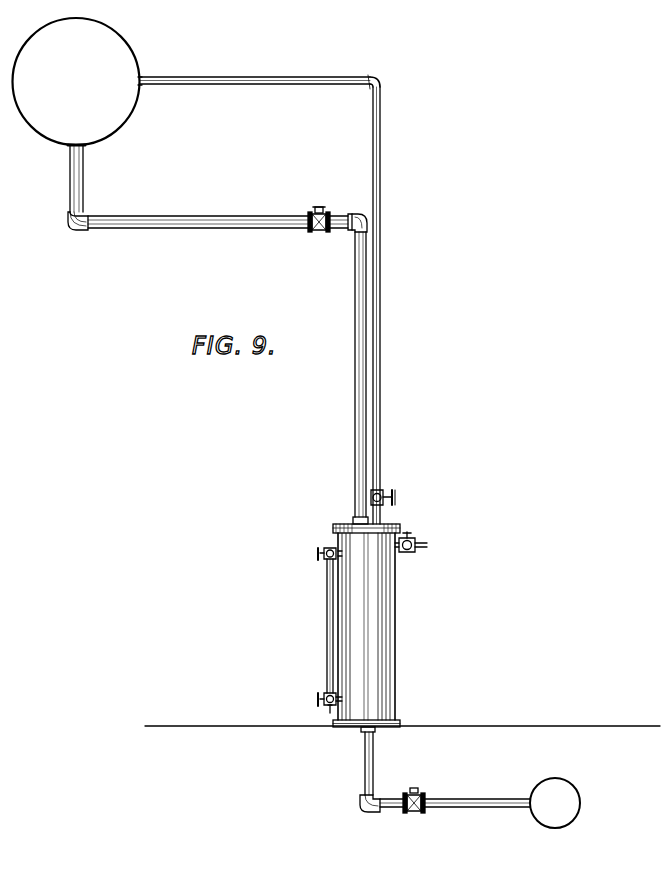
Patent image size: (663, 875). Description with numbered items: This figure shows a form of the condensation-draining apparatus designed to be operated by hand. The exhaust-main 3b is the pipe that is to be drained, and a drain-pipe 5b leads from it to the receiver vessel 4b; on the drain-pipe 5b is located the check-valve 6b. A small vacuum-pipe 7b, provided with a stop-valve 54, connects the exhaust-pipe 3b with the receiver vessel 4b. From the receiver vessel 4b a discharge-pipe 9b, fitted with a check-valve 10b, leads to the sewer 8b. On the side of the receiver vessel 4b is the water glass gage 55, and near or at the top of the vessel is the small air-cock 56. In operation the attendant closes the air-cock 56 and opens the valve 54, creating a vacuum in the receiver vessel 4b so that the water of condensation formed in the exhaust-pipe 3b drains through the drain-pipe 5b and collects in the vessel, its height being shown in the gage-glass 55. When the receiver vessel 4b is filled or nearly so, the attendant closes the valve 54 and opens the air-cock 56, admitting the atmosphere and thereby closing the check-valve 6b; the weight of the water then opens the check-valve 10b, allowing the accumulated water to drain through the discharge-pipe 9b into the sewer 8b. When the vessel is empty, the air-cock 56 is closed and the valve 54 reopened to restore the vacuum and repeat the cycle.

The exhaust-main 3b is at (78, 81).
The receiver vessel 4b is at (380, 598).
The drain-pipe 5b is at (207, 215).
The check-valve 6b is at (317, 210).
The vacuum-pipe 7b is at (381, 182).
The sewer 8b is at (566, 803).
The discharge-pipe 9b is at (457, 806).
The check-valve 10b is at (417, 793).
The stop-valve 54 is at (381, 493).
The water glass gage 55 is at (327, 615).
The air-cock 56 is at (413, 546).